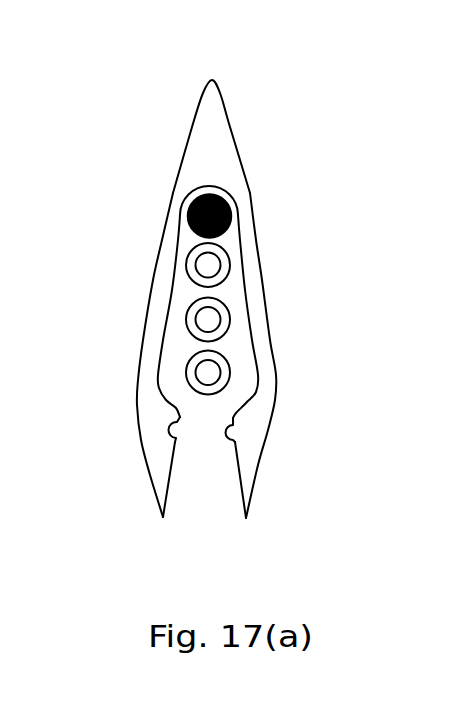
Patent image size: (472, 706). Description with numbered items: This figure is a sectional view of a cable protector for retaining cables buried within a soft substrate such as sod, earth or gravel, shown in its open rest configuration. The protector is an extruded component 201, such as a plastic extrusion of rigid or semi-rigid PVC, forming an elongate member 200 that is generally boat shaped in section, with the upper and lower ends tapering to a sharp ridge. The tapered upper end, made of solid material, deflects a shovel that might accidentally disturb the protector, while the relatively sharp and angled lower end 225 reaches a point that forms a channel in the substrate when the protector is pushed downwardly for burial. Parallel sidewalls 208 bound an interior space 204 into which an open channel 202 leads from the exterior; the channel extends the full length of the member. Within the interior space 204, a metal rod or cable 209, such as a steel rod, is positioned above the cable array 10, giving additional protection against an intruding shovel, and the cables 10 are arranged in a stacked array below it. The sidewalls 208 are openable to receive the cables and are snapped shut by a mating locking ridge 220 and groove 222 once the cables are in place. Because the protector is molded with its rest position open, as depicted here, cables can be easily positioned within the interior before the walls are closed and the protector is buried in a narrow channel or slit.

The extruded component 201 is at (172, 60).
The elongate member 200 is at (272, 388).
The sidewalls 208 is at (157, 290).
The interior space 204 is at (175, 355).
The metal rod or cable 209 is at (237, 203).
The cables 10 is at (237, 253).
The groove 222 is at (163, 437).
The locking ridge 220 is at (217, 442).
The open channel 202 is at (210, 500).
The lower end 225 is at (253, 448).